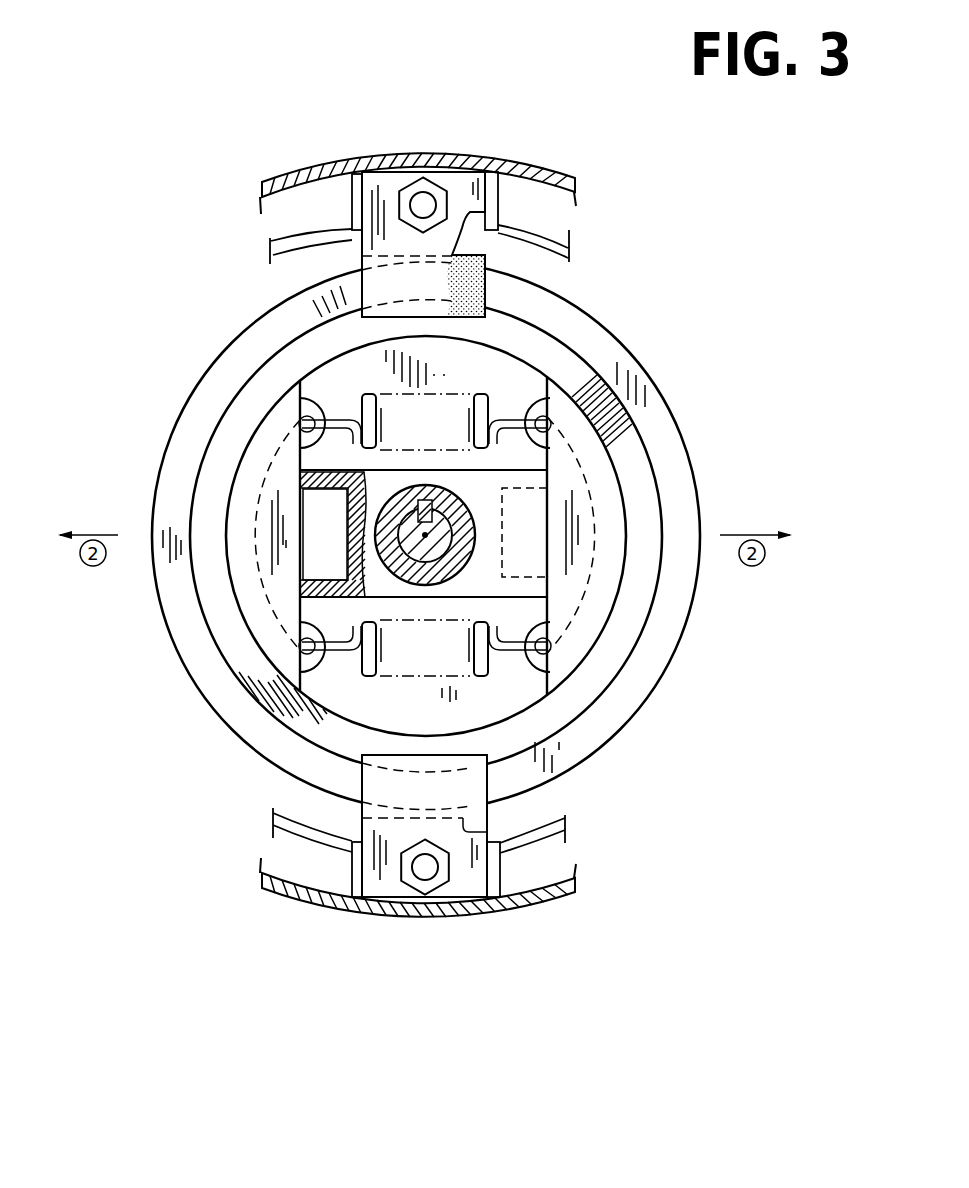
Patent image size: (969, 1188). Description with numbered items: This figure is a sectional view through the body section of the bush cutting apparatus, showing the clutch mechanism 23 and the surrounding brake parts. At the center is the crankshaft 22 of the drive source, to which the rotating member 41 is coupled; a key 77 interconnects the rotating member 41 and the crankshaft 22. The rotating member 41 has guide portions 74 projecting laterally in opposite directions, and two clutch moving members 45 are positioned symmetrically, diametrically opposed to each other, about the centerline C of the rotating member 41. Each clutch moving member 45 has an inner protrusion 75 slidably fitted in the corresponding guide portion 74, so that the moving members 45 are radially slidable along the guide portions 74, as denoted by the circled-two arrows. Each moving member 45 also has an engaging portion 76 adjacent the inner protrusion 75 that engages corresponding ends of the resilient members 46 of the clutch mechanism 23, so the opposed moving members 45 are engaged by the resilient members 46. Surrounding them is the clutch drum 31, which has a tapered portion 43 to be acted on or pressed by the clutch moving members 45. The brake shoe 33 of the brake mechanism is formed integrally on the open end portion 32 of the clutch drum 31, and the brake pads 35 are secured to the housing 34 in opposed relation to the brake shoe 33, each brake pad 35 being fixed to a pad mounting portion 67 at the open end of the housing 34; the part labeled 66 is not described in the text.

The crankshaft 22 is at (452, 508).
The clutch mechanism 23 is at (385, 479).
The clutch drum 31 is at (268, 303).
The open end portion 32 is at (226, 668).
The brake shoe 33 is at (246, 722).
The housing 34 is at (524, 162).
The brake pads 35 is at (487, 264).
The rotating member 41 is at (408, 467).
The tapered portion 43 is at (220, 626).
The clutch moving members 45 is at (247, 473).
The resilient members 46 is at (318, 395).
The mounting arm 66 is at (555, 217).
The pad mounting portions 67 is at (518, 203).
The guide portions 74 is at (312, 508).
The inner protrusion 75 is at (326, 550).
The engaging portion 76 is at (303, 378).
The key 77 is at (428, 500).
The centerline C is at (428, 535).